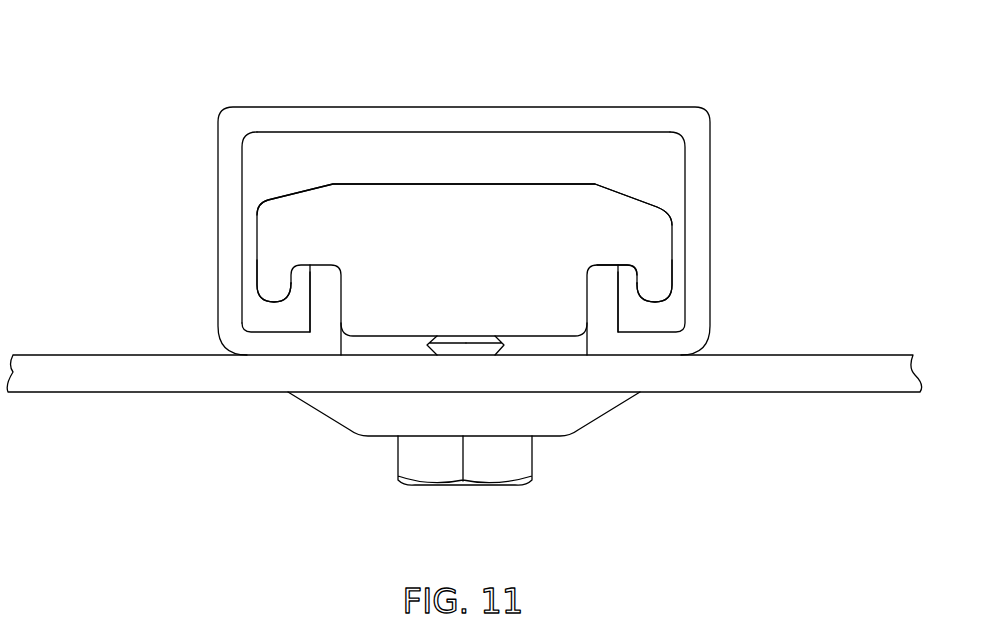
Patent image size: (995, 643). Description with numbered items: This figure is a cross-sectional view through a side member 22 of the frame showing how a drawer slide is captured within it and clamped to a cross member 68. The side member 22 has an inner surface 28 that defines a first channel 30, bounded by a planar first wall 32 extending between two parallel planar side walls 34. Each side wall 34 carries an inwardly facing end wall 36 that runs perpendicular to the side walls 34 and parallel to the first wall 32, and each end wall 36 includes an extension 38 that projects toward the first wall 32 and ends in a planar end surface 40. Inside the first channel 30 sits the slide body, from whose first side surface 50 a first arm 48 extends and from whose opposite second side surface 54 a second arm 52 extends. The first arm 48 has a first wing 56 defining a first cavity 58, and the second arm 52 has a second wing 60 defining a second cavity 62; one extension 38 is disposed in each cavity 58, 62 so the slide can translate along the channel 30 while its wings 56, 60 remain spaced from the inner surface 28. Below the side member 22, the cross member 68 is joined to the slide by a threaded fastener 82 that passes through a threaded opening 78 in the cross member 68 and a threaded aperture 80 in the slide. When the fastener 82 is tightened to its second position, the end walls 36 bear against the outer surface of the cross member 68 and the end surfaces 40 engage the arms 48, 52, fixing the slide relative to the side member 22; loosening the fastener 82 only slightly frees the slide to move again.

The side member 22 is at (381, 226).
The inner surface 28 is at (373, 133).
The first channel 30 is at (647, 146).
The first wall 32 is at (521, 118).
The side wall 34 is at (228, 252).
The end wall 36 is at (268, 347).
The extension 38 is at (602, 310).
The end surface 40 is at (613, 261).
The first arm 48 is at (307, 228).
The first side surface 50 is at (345, 288).
The second arm 52 is at (618, 230).
The second side surface 54 is at (586, 288).
The first wing 56 is at (267, 281).
The first cavity 58 is at (300, 287).
The second wing 60 is at (663, 278).
The second cavity 62 is at (630, 287).
The cross member 68 is at (88, 380).
The threaded opening 78 is at (426, 354).
The threaded aperture 80 is at (513, 360).
The threaded fastener 82 is at (509, 476).